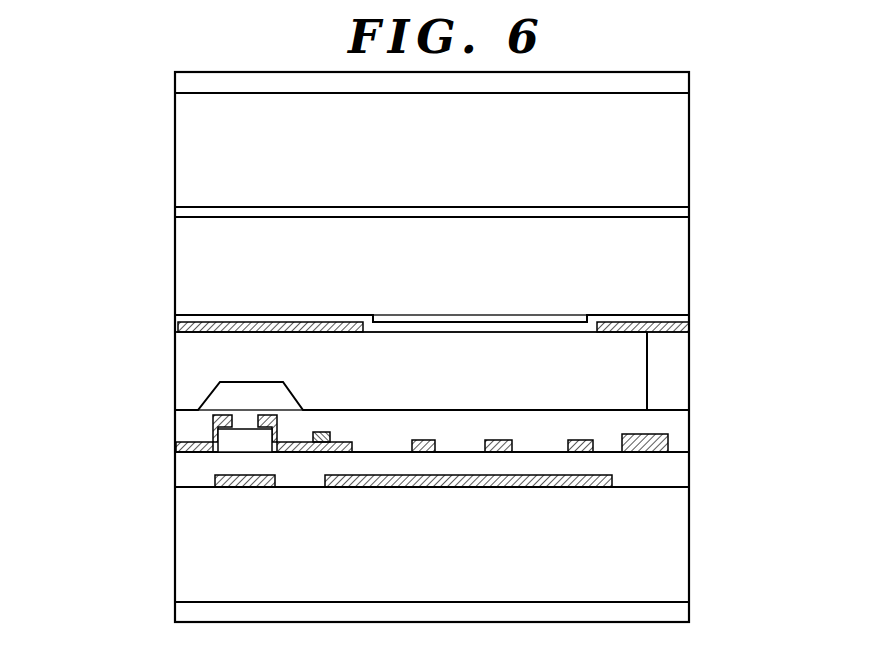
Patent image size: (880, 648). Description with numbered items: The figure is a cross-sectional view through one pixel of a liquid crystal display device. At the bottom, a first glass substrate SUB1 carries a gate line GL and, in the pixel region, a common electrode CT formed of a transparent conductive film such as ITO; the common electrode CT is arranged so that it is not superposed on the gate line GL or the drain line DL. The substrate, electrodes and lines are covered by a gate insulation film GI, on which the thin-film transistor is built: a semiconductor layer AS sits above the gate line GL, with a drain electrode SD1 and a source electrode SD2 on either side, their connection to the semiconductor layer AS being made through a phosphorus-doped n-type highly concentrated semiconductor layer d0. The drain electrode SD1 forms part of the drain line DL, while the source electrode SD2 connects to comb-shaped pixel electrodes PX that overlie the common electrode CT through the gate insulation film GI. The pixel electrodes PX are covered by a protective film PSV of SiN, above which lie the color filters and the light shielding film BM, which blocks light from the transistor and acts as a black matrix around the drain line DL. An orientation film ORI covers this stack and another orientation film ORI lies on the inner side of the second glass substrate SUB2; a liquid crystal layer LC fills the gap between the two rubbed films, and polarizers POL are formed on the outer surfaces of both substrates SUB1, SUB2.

The polarizer POL is at (183, 80).
The second substrate SUB2 is at (185, 152).
The orientation film ORI is at (174, 212).
The liquid crystal layer LC is at (682, 233).
The light shielding film BM is at (250, 322).
The protective film PSV is at (683, 418).
The gate insulation film GI is at (676, 468).
The first substrate SUB1 is at (192, 568).
The drain electrode SD1 is at (178, 447).
The source electrode SD2 is at (293, 442).
The semiconductor layer AS is at (233, 450).
The n-type highly concentrated semiconductor layer d0 is at (252, 429).
The pixel electrode PX is at (580, 440).
The drain line DL is at (670, 440).
The gate line GL is at (213, 487).
The common electrode CT is at (475, 488).